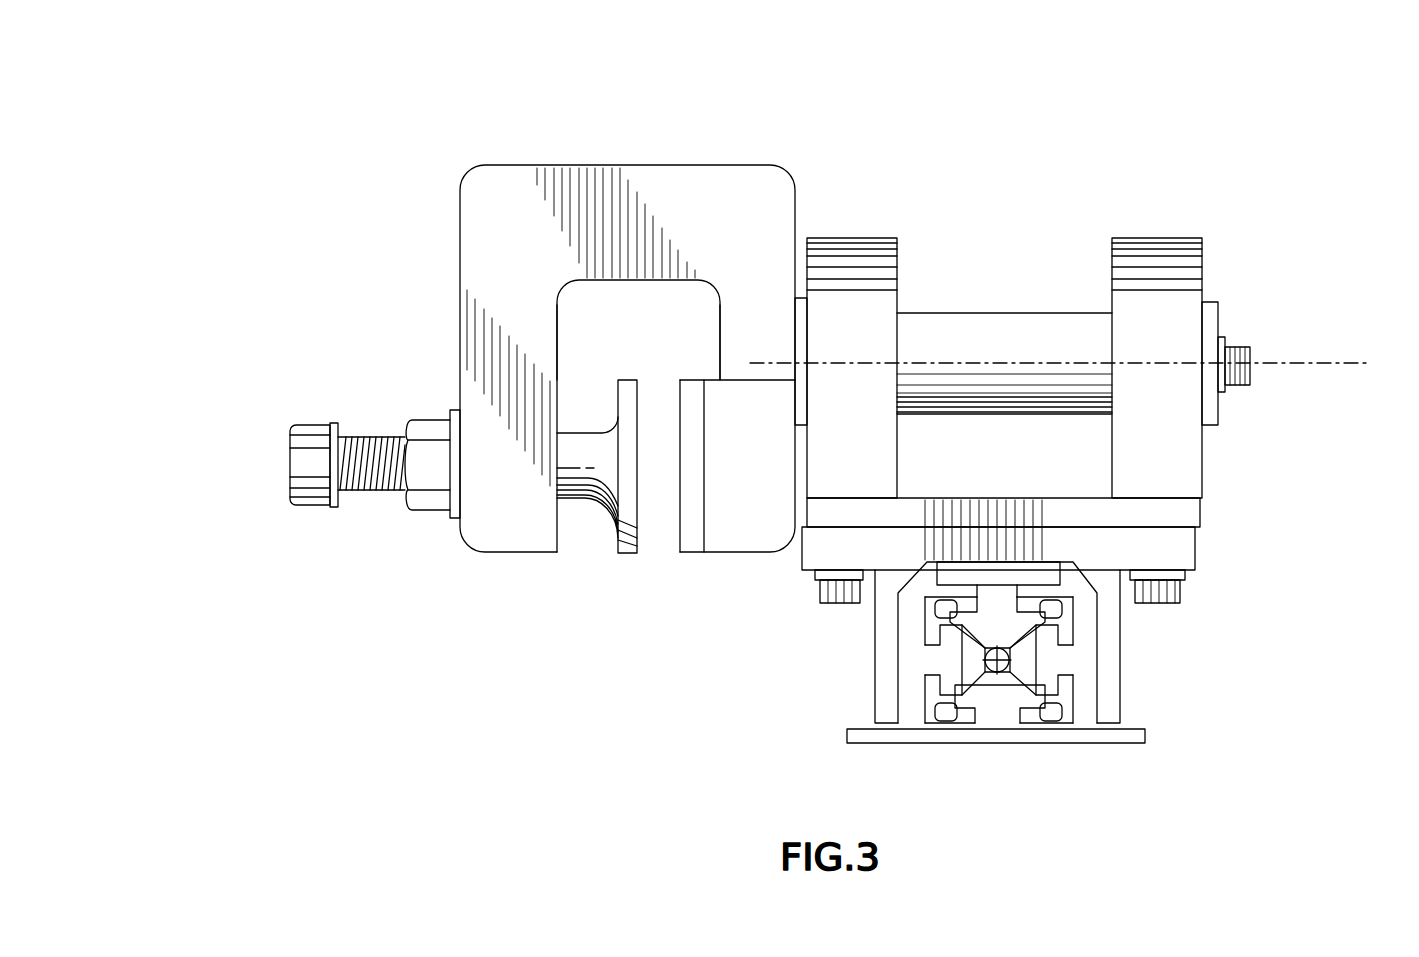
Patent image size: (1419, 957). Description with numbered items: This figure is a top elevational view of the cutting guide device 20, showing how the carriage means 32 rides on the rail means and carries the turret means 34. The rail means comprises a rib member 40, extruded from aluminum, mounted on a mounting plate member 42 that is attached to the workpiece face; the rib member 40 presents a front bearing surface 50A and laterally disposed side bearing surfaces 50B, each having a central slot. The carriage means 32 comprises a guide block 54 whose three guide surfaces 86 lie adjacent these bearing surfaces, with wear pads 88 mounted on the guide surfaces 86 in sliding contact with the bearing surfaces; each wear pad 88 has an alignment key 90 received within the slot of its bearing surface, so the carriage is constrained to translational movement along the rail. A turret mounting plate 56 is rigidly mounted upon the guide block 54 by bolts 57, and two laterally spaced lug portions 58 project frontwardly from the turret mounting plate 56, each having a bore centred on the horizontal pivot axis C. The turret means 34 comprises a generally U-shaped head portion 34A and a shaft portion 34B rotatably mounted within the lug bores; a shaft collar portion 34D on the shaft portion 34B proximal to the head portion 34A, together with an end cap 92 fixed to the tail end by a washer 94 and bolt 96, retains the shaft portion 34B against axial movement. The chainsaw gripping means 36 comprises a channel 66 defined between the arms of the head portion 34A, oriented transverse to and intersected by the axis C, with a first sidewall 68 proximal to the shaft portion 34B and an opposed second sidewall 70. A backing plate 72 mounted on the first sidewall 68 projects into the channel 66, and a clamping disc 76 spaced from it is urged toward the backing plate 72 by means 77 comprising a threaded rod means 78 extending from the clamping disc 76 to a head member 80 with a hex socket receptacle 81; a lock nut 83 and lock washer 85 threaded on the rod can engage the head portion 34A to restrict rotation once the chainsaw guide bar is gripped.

The cutting guide device 20 is at (883, 87).
The carriage means 32 is at (1252, 640).
The turret means 34 is at (998, 218).
The head portion 34A is at (690, 175).
The shaft portion 34B is at (953, 330).
The shaft collar portion 34D is at (805, 237).
The chainsaw gripping means 36 is at (694, 560).
The rib member 40 is at (1000, 672).
The mounting plate member 42 is at (1143, 738).
The front bearing surface 50A is at (962, 610).
The side bearing surfaces 50B is at (915, 705).
The guide block 54 is at (1193, 565).
The turret mounting plate 56 is at (1193, 525).
The bolts 57 is at (825, 590).
The lug portions 58 is at (858, 262).
The channel 66 is at (665, 309).
The first sidewall 68 is at (720, 345).
The second sidewall 70 is at (560, 330).
The backing plate 72 is at (697, 395).
The clamping disc 76 is at (623, 383).
The means for urging clamping disc 77 is at (362, 542).
The threaded rod means 78 is at (368, 440).
The head member 80 is at (307, 425).
The hex socket receptacle 81 is at (278, 462).
The lock nut 83 is at (418, 420).
The lock washer 85 is at (447, 415).
The guide surfaces 86 is at (955, 560).
The wear pads 88 is at (1040, 565).
The alignment key 90 is at (997, 587).
The end cap 92 is at (1205, 423).
The washer 94 is at (1223, 392).
The bolt 96 is at (1247, 370).
The horizontal pivot axis C is at (1313, 362).